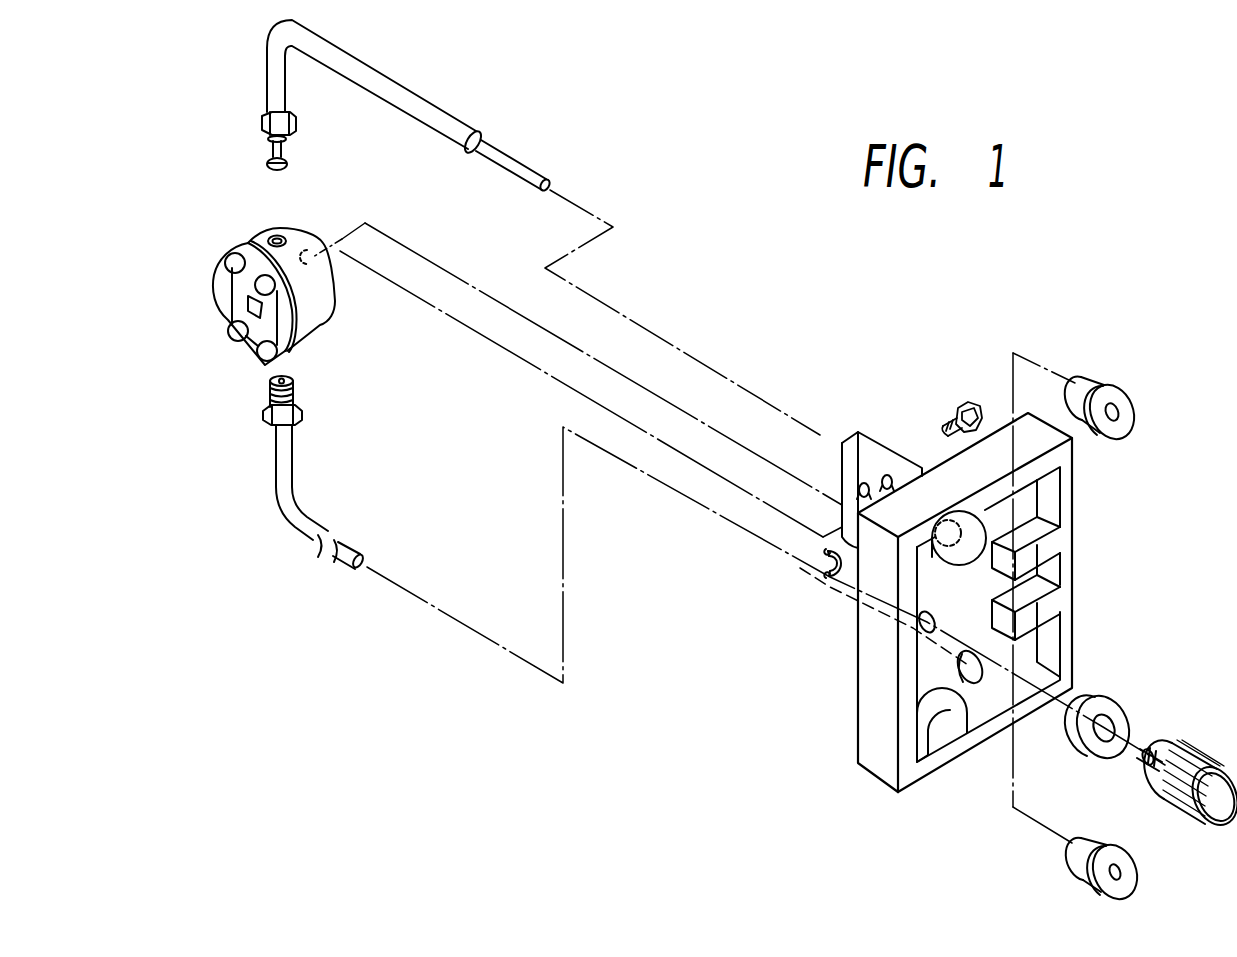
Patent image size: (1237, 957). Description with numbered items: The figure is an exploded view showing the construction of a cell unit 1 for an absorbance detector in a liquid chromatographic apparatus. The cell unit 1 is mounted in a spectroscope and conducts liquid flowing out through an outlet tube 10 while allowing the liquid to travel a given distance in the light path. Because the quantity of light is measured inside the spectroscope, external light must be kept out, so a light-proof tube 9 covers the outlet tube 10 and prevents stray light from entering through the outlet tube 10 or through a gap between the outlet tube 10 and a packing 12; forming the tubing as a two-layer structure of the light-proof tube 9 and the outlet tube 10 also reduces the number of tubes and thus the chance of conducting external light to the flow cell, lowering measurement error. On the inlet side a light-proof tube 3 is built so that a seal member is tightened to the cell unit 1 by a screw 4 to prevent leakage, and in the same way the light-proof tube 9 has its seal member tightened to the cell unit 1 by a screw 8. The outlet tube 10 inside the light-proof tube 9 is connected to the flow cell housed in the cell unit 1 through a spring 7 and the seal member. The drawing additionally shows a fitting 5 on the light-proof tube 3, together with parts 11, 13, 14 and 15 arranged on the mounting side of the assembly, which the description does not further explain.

The cell unit 1 is at (212, 292).
The light-proof tube 3 is at (310, 540).
The screw 4 is at (265, 420).
The threaded fitting 5 is at (266, 392).
The spring 7 is at (272, 155).
The screw 8 is at (258, 118).
The light-proof tube 9 is at (470, 130).
The outlet tube 10 is at (553, 182).
The lower bushing 11 is at (1138, 873).
The packing 12 is at (1135, 407).
The mounting plate 13 is at (1080, 512).
The washer 14 is at (1114, 698).
The knob 15 is at (1200, 745).